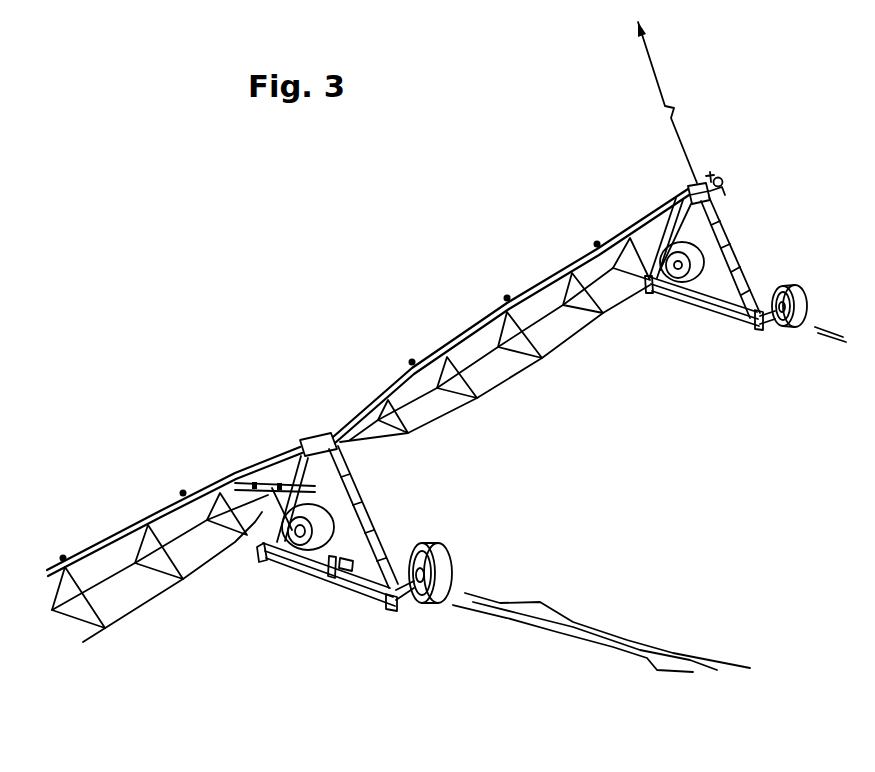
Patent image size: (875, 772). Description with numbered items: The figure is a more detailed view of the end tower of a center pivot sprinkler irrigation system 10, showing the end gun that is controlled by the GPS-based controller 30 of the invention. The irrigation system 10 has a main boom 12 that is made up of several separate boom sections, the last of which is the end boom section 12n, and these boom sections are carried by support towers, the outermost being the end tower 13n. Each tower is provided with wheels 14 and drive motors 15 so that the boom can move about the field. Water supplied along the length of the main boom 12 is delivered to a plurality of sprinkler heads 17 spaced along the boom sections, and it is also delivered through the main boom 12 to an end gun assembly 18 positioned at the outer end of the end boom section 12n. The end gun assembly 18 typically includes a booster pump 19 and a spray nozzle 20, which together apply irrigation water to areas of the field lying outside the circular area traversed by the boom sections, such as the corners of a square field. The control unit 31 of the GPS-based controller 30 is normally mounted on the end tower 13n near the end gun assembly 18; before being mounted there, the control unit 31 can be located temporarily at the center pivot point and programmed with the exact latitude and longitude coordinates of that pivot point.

The center pivot sprinkler irrigation system 10 is at (192, 625).
The main boom 12 is at (557, 272).
The end boom section 12n is at (477, 323).
The end tower 13n is at (735, 203).
The wheels 14 is at (787, 333).
The drive motors 15 is at (745, 295).
The sprinkler heads 17 is at (181, 490).
The end gun assembly 18 is at (740, 146).
The booster pump 19 is at (709, 174).
The spray nozzle 20 is at (722, 162).
The GPS-based controller 30 is at (690, 188).
The control unit 31 is at (719, 190).